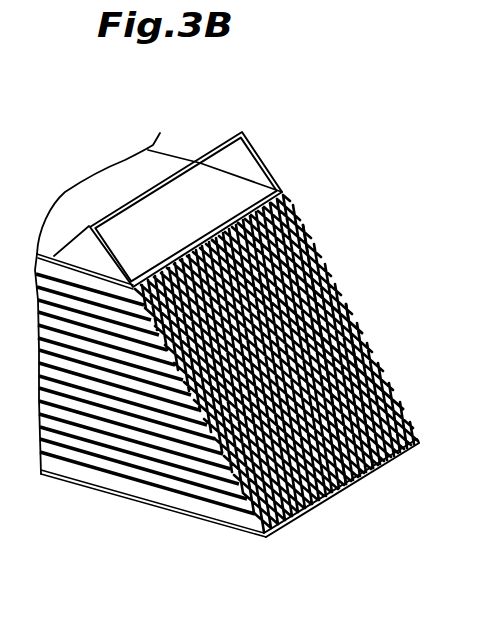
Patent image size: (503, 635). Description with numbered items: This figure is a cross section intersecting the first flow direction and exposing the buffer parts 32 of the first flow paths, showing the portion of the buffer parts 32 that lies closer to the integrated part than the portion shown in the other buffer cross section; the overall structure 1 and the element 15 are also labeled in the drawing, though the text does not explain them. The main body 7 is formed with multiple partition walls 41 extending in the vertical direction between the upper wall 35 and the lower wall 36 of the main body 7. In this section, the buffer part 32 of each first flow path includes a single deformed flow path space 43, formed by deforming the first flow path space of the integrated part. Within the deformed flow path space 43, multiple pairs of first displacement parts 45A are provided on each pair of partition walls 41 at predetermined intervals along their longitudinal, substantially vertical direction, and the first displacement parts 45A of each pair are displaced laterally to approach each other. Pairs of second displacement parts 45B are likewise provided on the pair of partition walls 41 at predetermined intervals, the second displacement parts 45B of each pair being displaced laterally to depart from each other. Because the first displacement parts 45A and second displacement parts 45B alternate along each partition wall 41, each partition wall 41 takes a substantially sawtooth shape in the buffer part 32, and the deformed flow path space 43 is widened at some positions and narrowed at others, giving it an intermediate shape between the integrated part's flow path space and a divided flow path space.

The cage assembly 1 is at (189, 107).
The main body 7 is at (117, 507).
The top frame 15 is at (258, 153).
The buffer part 32 is at (323, 214).
The upper wall 35 is at (160, 263).
The lower wall 36 is at (310, 507).
The partition wall 41 is at (328, 277).
The deformed flow path space 43 is at (378, 379).
The first displacement part 45A is at (356, 333).
The second displacement part 45B is at (339, 301).